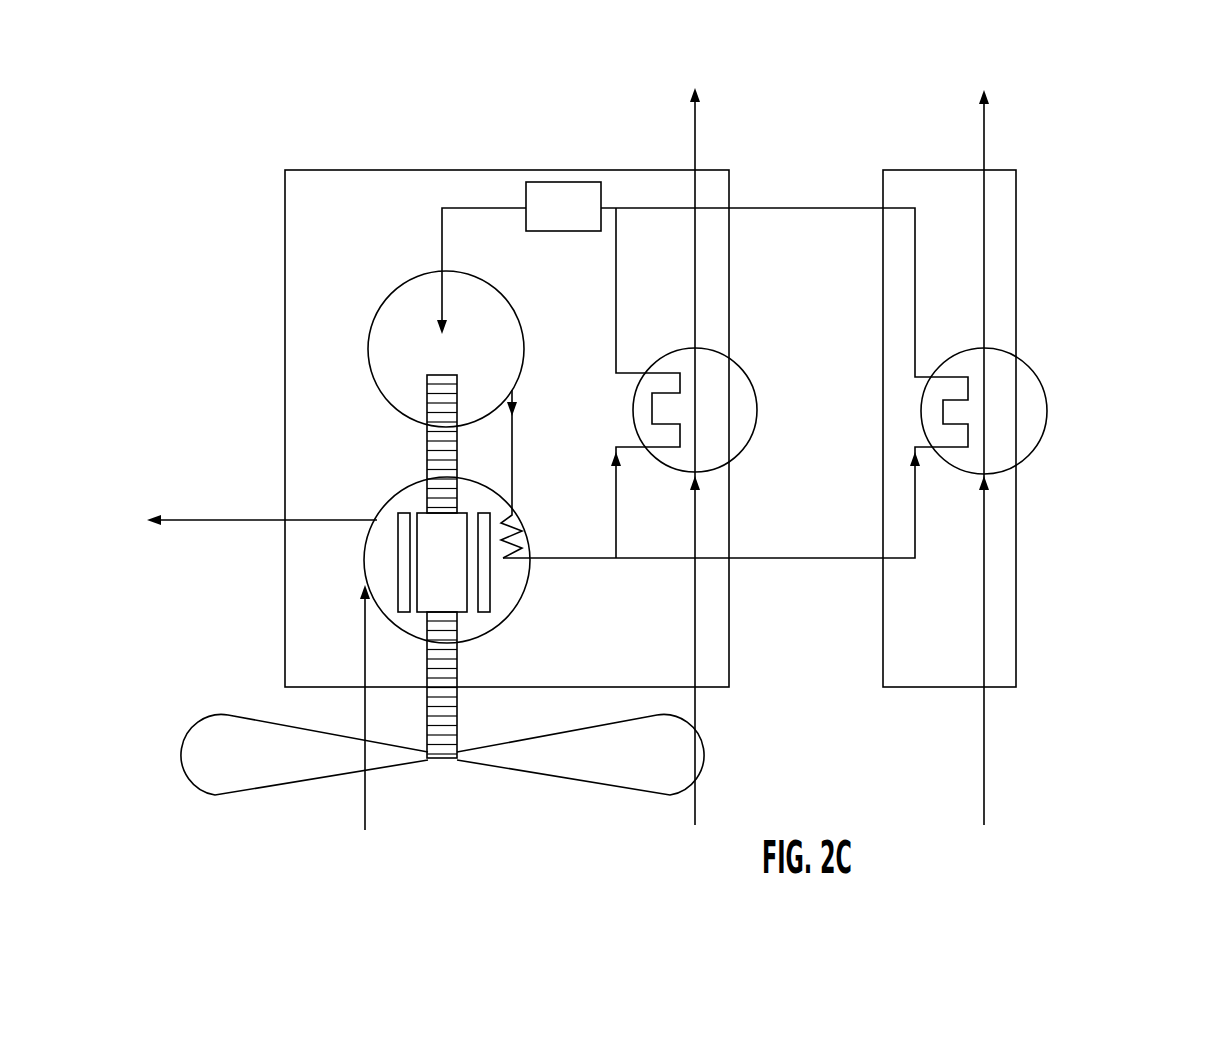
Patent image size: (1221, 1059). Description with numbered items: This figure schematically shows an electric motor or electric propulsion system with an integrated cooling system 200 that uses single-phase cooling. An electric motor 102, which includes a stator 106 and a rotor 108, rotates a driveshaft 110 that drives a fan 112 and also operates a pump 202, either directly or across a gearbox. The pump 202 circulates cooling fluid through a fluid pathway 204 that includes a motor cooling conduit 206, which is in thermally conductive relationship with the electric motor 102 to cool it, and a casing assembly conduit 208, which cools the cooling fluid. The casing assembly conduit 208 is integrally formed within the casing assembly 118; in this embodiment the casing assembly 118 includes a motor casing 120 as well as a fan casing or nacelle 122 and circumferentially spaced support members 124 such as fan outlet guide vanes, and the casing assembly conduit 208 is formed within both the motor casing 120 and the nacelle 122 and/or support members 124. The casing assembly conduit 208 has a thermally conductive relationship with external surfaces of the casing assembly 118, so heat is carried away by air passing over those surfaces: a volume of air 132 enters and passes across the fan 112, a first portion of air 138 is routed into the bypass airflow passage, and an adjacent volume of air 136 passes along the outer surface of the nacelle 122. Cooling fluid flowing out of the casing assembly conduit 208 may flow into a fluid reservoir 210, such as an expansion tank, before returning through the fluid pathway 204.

The integrated cooling system 200 is at (737, 367).
The fluid pathway 204 is at (503, 206).
The fluid reservoir 210 is at (556, 180).
The pump 202 is at (400, 284).
The motor cooling conduit 206 is at (528, 535).
The driveshaft 110 is at (427, 446).
The electric motor 102 is at (460, 558).
The stator 106 is at (491, 580).
The rotor 108 is at (470, 628).
The first portion of air 138 is at (225, 518).
The volume of air 132 is at (761, 461).
The adjacent volume of air 136 is at (695, 712).
The casing assembly conduit 208 is at (757, 400).
The casing assembly 118 is at (737, 428).
The motor casing 120 is at (729, 265).
The nacelle 122 is at (1036, 428).
The support members 124 is at (1016, 263).
The fan 112 is at (542, 804).